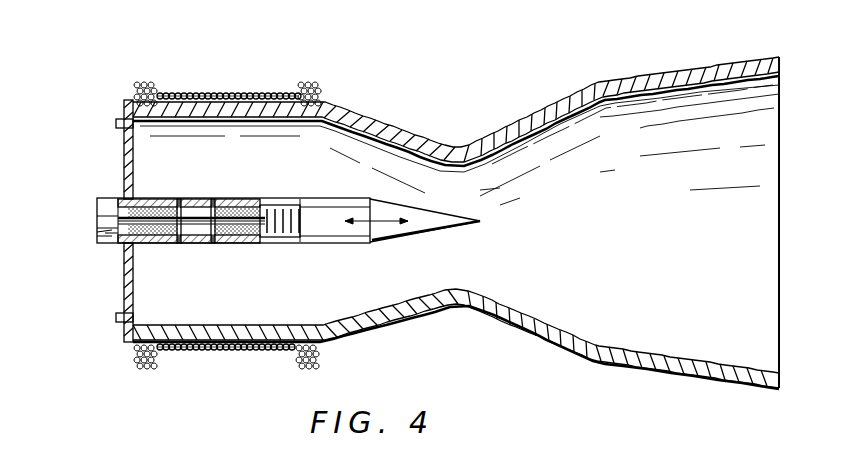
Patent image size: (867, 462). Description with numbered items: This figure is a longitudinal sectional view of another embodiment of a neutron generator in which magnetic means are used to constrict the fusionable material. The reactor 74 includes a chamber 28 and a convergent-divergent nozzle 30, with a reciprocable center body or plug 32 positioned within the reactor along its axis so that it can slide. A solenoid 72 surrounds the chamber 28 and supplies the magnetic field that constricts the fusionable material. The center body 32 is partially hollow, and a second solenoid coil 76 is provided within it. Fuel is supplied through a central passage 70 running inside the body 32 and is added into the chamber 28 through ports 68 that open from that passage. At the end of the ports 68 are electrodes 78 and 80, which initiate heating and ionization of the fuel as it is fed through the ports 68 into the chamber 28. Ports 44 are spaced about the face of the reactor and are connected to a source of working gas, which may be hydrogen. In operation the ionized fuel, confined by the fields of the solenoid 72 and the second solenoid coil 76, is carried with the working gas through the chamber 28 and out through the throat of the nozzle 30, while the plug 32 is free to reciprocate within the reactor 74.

The chamber 28 is at (135, 141).
The convergent-divergent nozzle 30 is at (636, 197).
The reciprocable center body 32 is at (356, 203).
The ports 44 is at (118, 119).
The ports 68 is at (170, 200).
The central passage 70 is at (108, 232).
The solenoid 72 is at (198, 90).
The reactor 74 is at (474, 314).
The second solenoid coil 76 is at (268, 216).
The electrodes 78 is at (136, 203).
The electrodes 80 is at (179, 200).